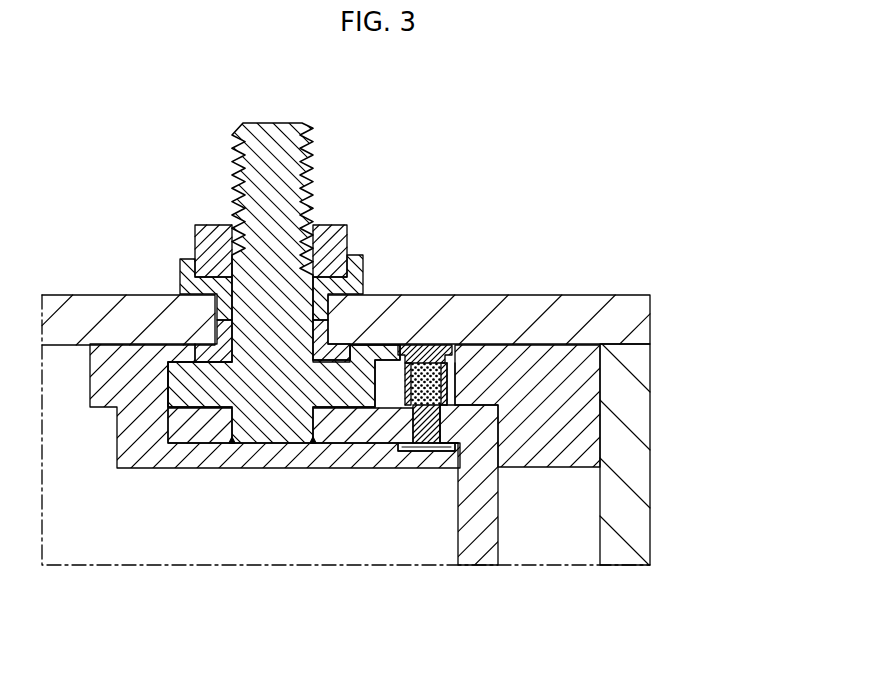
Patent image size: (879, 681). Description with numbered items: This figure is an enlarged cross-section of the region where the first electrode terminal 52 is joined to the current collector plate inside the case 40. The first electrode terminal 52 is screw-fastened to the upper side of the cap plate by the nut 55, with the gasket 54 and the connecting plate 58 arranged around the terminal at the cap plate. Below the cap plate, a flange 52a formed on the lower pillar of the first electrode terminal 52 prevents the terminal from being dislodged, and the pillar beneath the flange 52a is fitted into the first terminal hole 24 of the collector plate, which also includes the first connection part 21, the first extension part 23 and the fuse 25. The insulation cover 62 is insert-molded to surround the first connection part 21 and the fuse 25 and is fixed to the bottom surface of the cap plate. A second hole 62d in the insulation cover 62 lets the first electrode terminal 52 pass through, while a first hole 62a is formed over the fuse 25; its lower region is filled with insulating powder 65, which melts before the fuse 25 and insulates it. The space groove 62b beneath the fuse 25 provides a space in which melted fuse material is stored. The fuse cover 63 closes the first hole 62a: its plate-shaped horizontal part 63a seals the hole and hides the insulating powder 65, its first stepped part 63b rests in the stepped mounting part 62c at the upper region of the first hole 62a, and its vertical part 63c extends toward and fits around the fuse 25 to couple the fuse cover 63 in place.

The first electrode terminal 52 is at (245, 253).
The flange 52a is at (178, 380).
The gasket 54 is at (217, 343).
The nut 55 is at (218, 238).
The connecting plate 58 is at (360, 262).
The fuse cover 63 is at (451, 295).
The horizontal part 63a is at (418, 352).
The first stepped part 63b is at (488, 321).
The vertical part 63c is at (430, 372).
The stepped mounting part 62c is at (453, 348).
The first hole 62a is at (450, 390).
The insulating powder 65 is at (433, 417).
The case 40 is at (643, 475).
The second hole 62d is at (167, 403).
The first connection part 21 is at (193, 440).
The first terminal hole 24 is at (313, 420).
The fuse 25 is at (410, 420).
The space groove 62b is at (428, 452).
The first extension part 23 is at (490, 557).
The insulation cover 62 is at (548, 455).